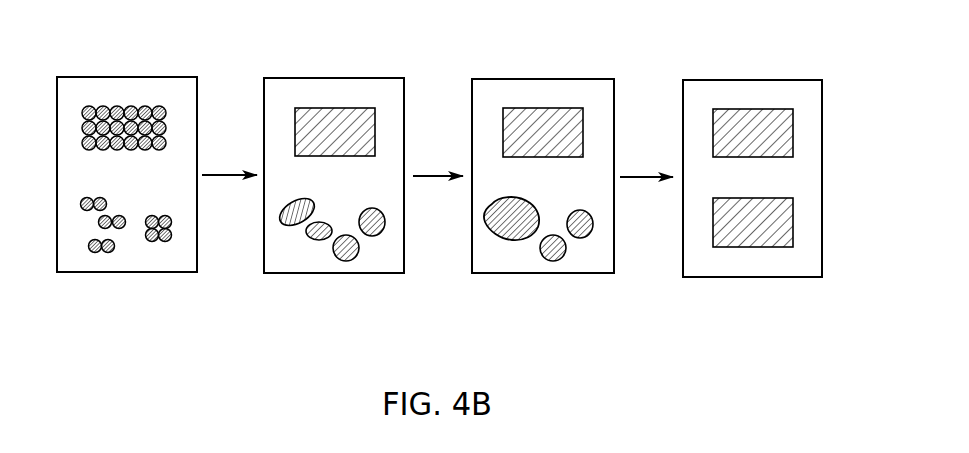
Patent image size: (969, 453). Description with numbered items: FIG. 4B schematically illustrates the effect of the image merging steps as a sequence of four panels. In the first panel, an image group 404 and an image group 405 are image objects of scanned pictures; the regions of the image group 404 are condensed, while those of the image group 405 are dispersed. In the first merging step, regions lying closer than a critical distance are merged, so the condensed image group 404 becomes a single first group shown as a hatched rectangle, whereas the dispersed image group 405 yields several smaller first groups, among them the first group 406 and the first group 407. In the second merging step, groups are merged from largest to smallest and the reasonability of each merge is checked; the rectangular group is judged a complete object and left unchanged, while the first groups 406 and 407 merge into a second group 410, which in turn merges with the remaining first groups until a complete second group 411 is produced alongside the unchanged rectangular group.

The image group 404 is at (112, 110).
The image group 405 is at (128, 248).
The first group 406 is at (280, 212).
The first group 407 is at (308, 239).
The second group 410 is at (503, 239).
The complete second group 411 is at (753, 247).